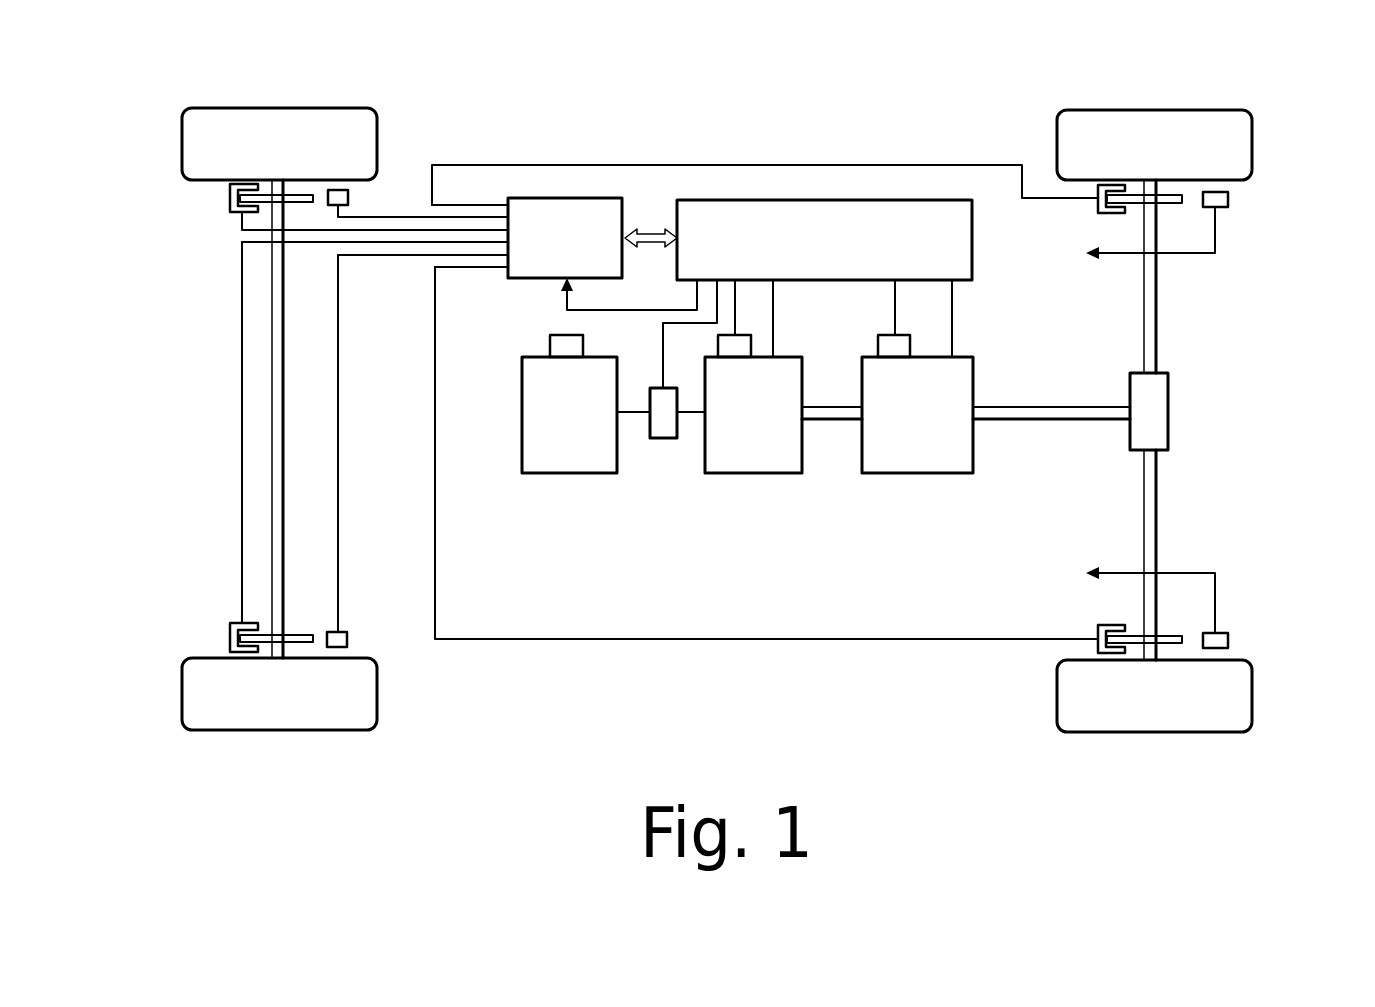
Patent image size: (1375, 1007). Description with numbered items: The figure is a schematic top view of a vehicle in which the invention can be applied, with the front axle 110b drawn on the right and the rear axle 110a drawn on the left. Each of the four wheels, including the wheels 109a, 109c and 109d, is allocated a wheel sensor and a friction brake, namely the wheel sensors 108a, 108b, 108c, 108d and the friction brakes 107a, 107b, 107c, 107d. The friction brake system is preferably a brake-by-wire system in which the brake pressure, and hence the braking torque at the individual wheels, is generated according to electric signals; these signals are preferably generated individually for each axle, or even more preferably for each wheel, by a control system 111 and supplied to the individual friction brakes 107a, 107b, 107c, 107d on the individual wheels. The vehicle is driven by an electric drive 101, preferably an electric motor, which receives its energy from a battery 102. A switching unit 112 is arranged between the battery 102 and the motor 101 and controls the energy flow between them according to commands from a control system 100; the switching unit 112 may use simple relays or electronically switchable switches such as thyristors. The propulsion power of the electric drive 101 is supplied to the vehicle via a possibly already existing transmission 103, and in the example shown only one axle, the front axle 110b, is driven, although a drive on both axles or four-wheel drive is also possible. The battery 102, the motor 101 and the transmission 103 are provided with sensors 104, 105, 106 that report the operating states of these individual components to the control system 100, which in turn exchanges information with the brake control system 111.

The control system 100 is at (823, 227).
The electric drive 101 is at (762, 442).
The battery 102 is at (557, 438).
The transmission 103 is at (912, 435).
The sensor 104 is at (565, 345).
The sensor 105 is at (733, 345).
The sensor 106 is at (893, 347).
The friction brake 107a is at (230, 198).
The friction brake 107b is at (230, 630).
The friction brake 107c is at (1103, 213).
The friction brake 107d is at (1098, 630).
The wheel sensor 108a is at (348, 198).
The wheel sensor 108b is at (347, 639).
The wheel sensor 108c is at (1228, 195).
The wheel sensor 108d is at (1228, 638).
The wheel 109a is at (263, 136).
The wheel 109c is at (1128, 120).
The wheel 109d is at (1162, 713).
The rear axle 110a is at (272, 407).
The front axle 110b is at (1152, 327).
The control system 111 is at (565, 222).
The switching unit 112 is at (663, 425).